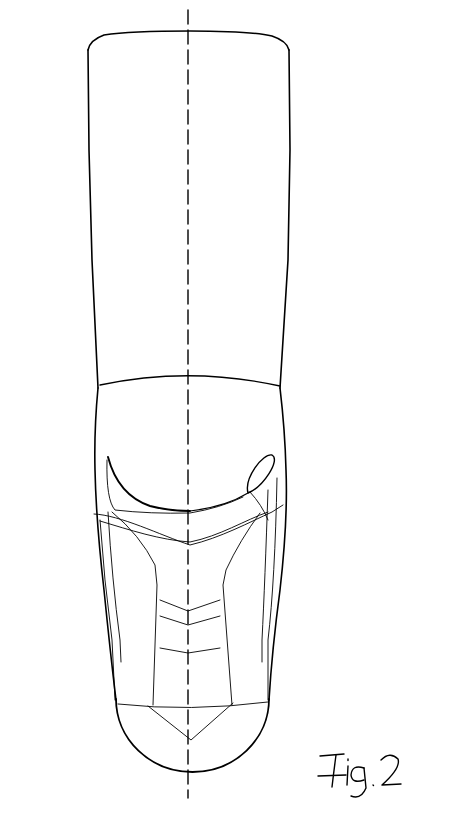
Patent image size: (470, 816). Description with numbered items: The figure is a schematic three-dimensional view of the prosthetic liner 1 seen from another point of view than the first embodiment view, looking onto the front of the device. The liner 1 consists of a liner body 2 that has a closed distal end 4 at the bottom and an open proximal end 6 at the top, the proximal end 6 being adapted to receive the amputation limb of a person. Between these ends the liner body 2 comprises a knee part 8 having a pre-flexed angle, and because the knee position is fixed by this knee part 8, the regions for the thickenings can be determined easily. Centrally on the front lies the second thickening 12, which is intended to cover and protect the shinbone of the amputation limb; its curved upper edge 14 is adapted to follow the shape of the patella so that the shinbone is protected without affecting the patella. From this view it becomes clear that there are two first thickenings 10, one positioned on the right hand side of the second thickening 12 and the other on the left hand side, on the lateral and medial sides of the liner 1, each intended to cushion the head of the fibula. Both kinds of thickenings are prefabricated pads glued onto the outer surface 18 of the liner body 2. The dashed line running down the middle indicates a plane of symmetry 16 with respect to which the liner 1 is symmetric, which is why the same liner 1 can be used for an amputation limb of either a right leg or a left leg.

The liner 1 is at (368, 240).
The liner body 2 is at (110, 261).
The closed distal end 4 is at (243, 749).
The open proximal end 6 is at (254, 36).
The knee part 8 is at (228, 432).
The first thickening 10 is at (100, 578).
The second thickening 12 is at (213, 663).
The curved upper edge 14 is at (272, 455).
The plane of symmetry 16 is at (190, 187).
The outer surface 18 is at (277, 342).